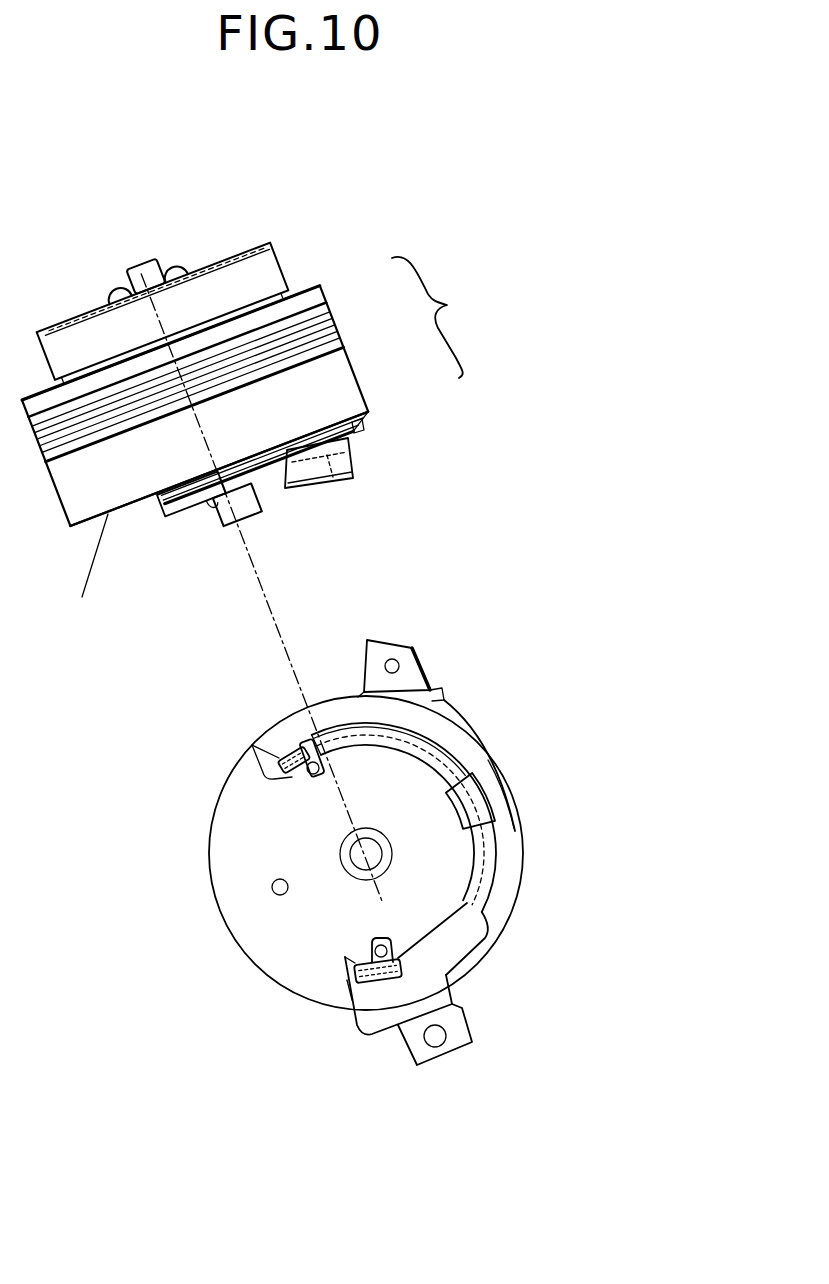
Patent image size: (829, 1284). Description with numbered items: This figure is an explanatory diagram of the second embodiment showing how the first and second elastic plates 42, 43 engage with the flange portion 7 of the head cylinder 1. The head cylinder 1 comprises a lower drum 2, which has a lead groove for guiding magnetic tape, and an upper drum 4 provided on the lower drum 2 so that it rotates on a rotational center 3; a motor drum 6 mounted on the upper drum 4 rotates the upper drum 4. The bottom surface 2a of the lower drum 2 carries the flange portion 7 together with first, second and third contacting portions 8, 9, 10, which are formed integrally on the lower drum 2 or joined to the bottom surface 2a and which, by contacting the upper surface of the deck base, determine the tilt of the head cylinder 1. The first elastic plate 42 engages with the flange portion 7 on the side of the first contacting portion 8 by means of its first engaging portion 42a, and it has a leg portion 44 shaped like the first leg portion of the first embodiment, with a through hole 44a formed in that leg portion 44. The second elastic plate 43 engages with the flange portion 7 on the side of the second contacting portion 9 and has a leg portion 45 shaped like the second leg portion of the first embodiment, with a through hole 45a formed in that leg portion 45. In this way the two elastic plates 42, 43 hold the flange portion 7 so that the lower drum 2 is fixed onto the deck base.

The head cylinder 1 is at (230, 1000).
The lower drum 2 is at (356, 377).
The bottom surface of the lower drum 2a is at (226, 904).
The rotational center 3 is at (240, 510).
The upper drum 4 is at (311, 320).
The motor drum 6 is at (280, 262).
The flange portion 7 is at (495, 880).
The first contacting portion 8 is at (357, 963).
The second contacting portion 9 is at (195, 514).
The third contacting portion 10 is at (478, 805).
The first elastic plate 42 is at (358, 1027).
The first engaging portion 42a is at (350, 990).
The second elastic plate 43 is at (364, 427).
The leg portion 44 is at (450, 1050).
The through hole 44a is at (447, 1034).
The leg portion 45 is at (302, 488).
The through hole 45a is at (396, 660).